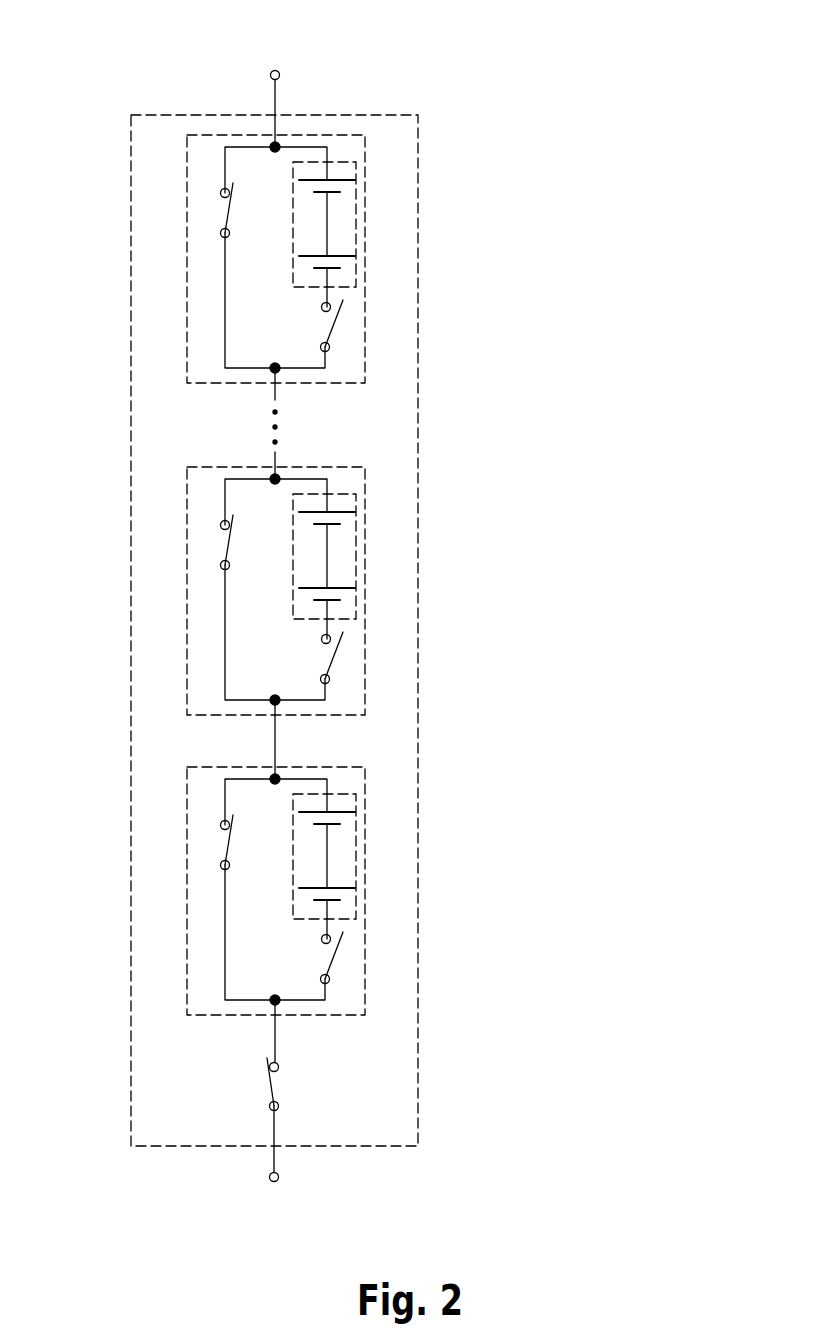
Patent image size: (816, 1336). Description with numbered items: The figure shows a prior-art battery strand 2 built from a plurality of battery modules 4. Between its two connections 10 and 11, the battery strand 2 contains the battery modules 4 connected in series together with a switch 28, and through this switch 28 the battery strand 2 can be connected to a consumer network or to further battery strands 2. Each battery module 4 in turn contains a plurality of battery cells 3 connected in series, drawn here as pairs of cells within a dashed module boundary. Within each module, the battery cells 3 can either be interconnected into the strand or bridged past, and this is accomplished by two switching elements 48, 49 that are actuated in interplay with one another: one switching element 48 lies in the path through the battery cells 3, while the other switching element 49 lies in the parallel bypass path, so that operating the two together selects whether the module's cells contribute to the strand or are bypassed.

The battery strand 2 is at (130, 168).
The battery cell 3 is at (376, 540).
The battery module 4 is at (187, 167).
The connection 10 is at (275, 70).
The connection 11 is at (280, 1177).
The switch 28 is at (268, 1080).
The switching element 48 is at (397, 642).
The switching element 49 is at (158, 526).